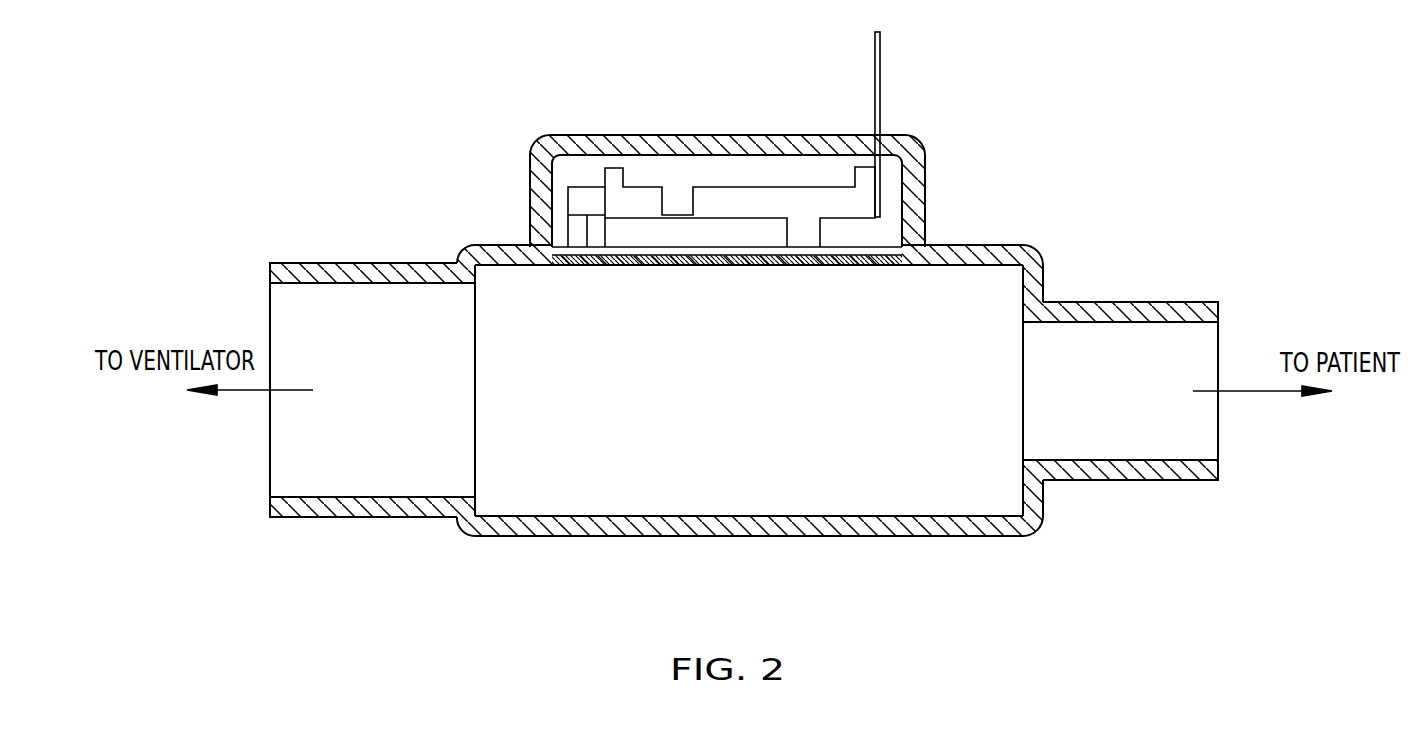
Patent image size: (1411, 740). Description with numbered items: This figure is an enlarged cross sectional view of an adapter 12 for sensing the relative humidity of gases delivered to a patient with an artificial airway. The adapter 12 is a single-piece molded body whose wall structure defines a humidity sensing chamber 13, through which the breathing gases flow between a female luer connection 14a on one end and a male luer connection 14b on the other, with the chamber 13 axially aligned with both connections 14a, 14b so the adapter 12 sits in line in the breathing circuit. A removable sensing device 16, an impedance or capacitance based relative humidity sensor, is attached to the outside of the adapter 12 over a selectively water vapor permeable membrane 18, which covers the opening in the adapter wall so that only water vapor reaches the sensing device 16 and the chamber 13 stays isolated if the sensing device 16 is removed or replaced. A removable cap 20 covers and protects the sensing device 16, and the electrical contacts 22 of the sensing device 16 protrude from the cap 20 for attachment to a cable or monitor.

The adapter 12 is at (582, 537).
The humidity sensing chamber 13 is at (797, 493).
The female luer connection 14a is at (316, 485).
The male luer connection 14b is at (1140, 345).
The sensing device 16 is at (721, 207).
The selectively water vapor permeable membrane 18 is at (843, 265).
The removable cap 20 is at (648, 135).
The electrical contacts 22 is at (882, 52).